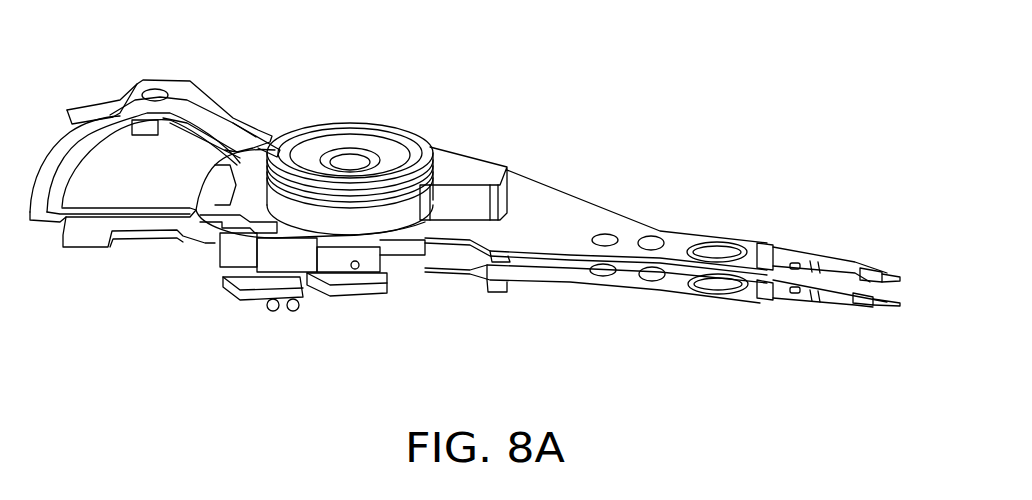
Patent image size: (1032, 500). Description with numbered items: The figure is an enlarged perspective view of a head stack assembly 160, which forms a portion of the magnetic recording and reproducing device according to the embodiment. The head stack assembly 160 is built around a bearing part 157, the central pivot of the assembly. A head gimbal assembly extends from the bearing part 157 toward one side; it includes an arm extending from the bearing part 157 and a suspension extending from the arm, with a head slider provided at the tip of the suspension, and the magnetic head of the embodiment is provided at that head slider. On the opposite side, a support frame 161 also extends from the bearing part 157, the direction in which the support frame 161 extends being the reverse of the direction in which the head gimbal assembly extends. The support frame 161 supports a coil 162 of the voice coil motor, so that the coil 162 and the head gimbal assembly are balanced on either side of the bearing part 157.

The bearing part 157 is at (368, 98).
The head stack assembly 160 is at (566, 118).
The support frame 161 is at (207, 95).
The coil 162 is at (120, 200).